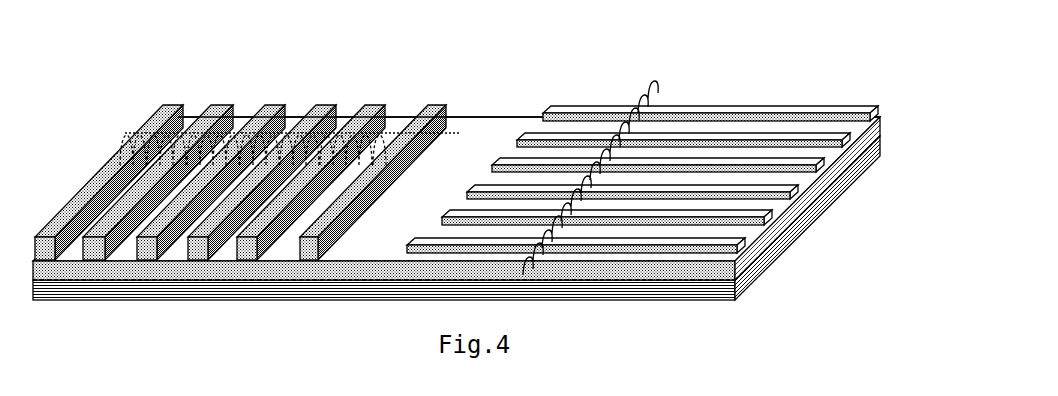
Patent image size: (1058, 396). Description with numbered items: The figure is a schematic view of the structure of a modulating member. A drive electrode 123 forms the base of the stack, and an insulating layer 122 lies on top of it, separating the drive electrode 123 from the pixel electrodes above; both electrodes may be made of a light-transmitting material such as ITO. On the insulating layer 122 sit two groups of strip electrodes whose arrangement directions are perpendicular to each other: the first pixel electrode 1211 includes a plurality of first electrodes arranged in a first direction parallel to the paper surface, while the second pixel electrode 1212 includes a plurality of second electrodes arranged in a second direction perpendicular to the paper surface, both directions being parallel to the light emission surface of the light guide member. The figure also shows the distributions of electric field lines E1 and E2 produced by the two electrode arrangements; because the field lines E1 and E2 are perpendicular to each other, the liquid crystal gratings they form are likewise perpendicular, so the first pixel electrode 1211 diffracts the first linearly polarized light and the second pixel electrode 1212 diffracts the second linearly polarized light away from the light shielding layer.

The insulating layer 122 is at (808, 200).
The drive electrode 123 is at (763, 267).
The first pixel electrode 1211 is at (332, 102).
The second pixel electrode 1212 is at (780, 112).
The electric field lines E1 is at (236, 150).
The electric field lines E2 is at (598, 166).